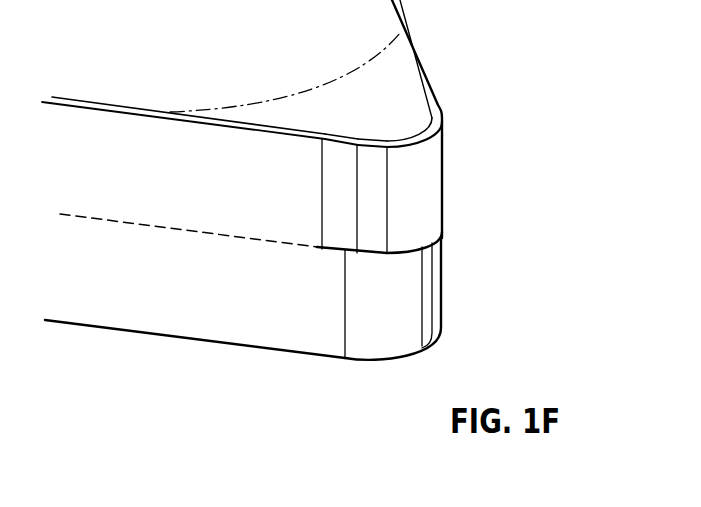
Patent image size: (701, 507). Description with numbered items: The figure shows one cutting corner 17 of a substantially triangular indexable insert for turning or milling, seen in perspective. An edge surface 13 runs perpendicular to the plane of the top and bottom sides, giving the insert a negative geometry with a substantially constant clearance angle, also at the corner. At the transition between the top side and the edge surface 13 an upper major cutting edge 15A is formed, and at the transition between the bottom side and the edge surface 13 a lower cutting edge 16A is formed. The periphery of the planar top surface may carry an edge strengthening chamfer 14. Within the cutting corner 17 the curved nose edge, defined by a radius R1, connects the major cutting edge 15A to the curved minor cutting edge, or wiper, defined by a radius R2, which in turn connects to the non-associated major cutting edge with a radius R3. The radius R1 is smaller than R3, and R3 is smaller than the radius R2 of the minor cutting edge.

The edge surface 13 is at (195, 315).
The edge strengthening chamfer 14 is at (418, 71).
The upper major cutting edge 15A is at (436, 97).
The lower cutting edge 16A is at (278, 351).
The cutting corner 17 is at (482, 237).
The radius of the nose edge R1 is at (422, 128).
The radius of the minor cutting edge R2 is at (369, 135).
The transition radius to the non-associated major cutting edge R3 is at (337, 136).